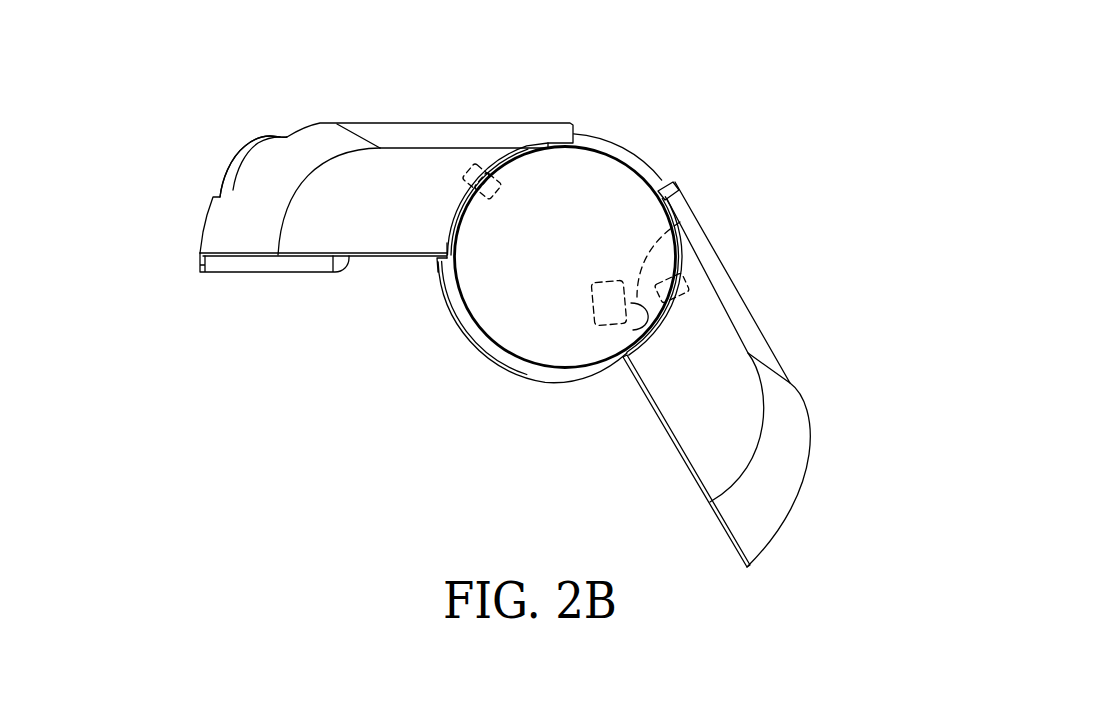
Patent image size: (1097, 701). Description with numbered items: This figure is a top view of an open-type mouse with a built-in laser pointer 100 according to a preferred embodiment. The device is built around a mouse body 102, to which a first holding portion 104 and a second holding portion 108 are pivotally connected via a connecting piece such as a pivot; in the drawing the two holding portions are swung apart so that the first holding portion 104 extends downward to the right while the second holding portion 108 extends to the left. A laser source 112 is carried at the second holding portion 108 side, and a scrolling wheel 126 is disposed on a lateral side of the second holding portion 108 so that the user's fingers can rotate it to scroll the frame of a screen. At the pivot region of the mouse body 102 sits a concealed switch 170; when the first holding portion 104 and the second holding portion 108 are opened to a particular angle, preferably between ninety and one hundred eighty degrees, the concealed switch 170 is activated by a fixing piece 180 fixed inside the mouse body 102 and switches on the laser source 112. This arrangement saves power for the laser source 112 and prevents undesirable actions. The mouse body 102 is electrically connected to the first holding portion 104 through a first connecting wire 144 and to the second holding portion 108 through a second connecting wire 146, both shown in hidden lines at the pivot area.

The mouse with a built-in laser pointer 100 is at (851, 33).
The mouse body 102 is at (649, 120).
The first holding portion 104 is at (832, 531).
The second holding portion 108 is at (177, 215).
The laser source 112 is at (200, 265).
The scrolling wheel 126 is at (245, 150).
The first connecting wire 144 is at (690, 304).
The second connecting wire 146 is at (466, 145).
The concealed switch 170 is at (680, 222).
The fixing piece 180 is at (593, 320).